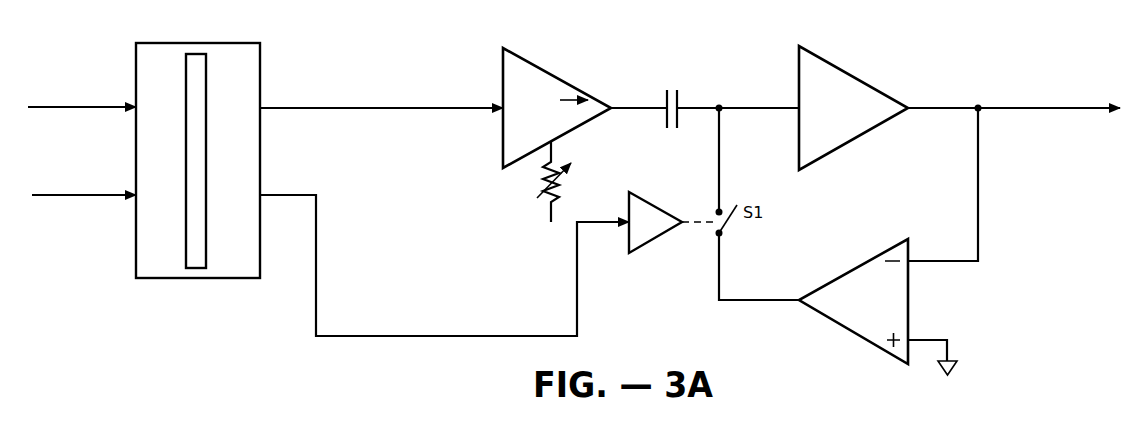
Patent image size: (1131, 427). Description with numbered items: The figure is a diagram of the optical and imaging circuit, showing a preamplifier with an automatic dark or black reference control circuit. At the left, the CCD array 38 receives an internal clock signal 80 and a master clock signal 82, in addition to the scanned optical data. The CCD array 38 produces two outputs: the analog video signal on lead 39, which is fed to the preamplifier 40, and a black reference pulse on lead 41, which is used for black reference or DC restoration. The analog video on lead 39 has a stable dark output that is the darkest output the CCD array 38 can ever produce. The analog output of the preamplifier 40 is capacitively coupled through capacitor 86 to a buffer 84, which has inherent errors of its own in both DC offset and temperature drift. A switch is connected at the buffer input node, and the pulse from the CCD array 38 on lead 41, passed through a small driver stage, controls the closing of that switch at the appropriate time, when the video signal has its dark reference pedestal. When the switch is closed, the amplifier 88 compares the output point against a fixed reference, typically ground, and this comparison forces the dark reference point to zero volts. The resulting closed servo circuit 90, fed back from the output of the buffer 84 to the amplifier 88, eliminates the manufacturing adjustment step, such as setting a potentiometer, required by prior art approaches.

The CCD array 38 is at (213, 280).
The internal clock signal 80 is at (88, 108).
The master clock signal 82 is at (91, 197).
The lead 39 is at (380, 108).
The lead 41 is at (405, 336).
The preamplifier 40 is at (559, 78).
The capacitor 86 is at (685, 90).
The buffer 84 is at (862, 82).
The closed servo circuit 90 is at (970, 178).
The amplifier 88 is at (878, 256).